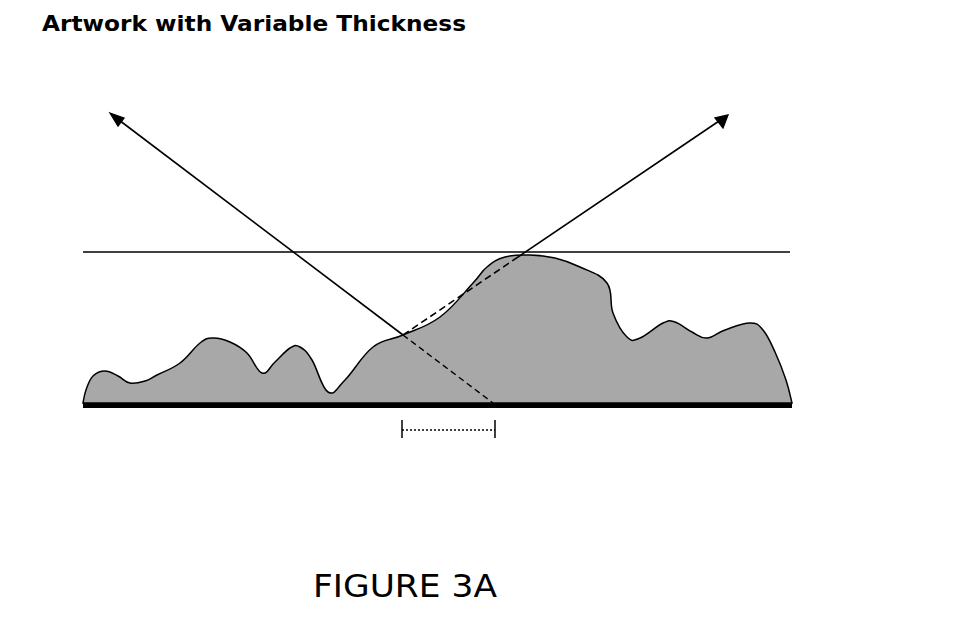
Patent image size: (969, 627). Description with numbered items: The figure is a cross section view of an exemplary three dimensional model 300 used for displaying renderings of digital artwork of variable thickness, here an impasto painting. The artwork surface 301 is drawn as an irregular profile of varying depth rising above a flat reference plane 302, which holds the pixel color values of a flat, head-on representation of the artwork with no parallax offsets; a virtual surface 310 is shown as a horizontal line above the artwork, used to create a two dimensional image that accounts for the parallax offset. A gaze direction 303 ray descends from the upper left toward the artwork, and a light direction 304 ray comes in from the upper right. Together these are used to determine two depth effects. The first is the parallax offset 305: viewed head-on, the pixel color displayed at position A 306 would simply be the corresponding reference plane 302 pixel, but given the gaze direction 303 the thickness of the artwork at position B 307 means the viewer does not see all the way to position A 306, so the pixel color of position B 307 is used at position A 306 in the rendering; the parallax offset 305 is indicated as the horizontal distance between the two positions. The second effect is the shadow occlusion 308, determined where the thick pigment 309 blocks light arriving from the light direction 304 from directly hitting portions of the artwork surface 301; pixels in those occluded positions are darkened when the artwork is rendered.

The three dimensional (3D) model 300 is at (128, 81).
The artwork surface 301 is at (620, 297).
The reference plane 302 is at (137, 410).
The gaze direction 303 is at (178, 167).
The light direction 304 is at (620, 188).
The parallax offset 305 is at (470, 432).
The position A 306 is at (493, 407).
The position B 307 is at (391, 409).
The shadow occlusion 308 is at (437, 312).
The thick pigment 309 is at (554, 381).
The virtual surface 310 is at (120, 254).